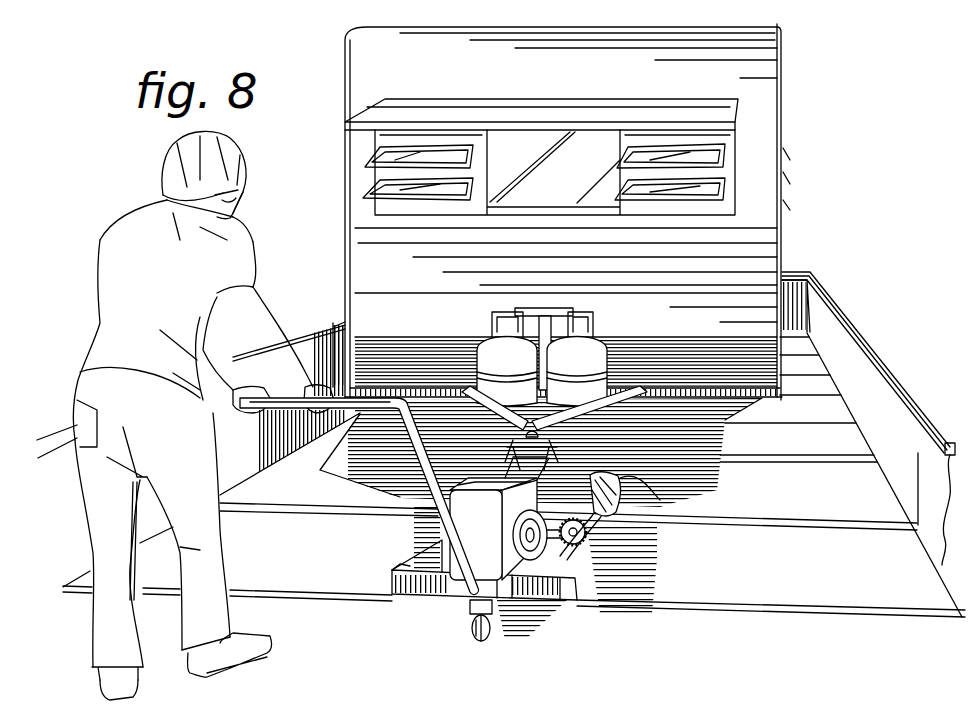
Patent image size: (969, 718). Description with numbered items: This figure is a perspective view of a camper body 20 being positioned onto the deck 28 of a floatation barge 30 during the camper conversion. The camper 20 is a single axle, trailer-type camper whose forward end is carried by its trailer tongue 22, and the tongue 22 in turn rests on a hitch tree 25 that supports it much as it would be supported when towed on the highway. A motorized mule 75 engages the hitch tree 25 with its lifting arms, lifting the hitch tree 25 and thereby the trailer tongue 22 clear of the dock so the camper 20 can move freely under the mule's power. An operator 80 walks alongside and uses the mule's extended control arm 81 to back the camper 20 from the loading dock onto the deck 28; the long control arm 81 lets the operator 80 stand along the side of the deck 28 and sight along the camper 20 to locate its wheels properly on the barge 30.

The camper body 20 is at (770, 100).
The trailer tongue 22 is at (720, 431).
The hitch tree 25 is at (625, 520).
The deck 28 is at (808, 566).
The floatation barge 30 is at (848, 333).
The motorized mule 75 is at (627, 558).
The operator 80 is at (108, 221).
The extended control arm 81 is at (290, 413).